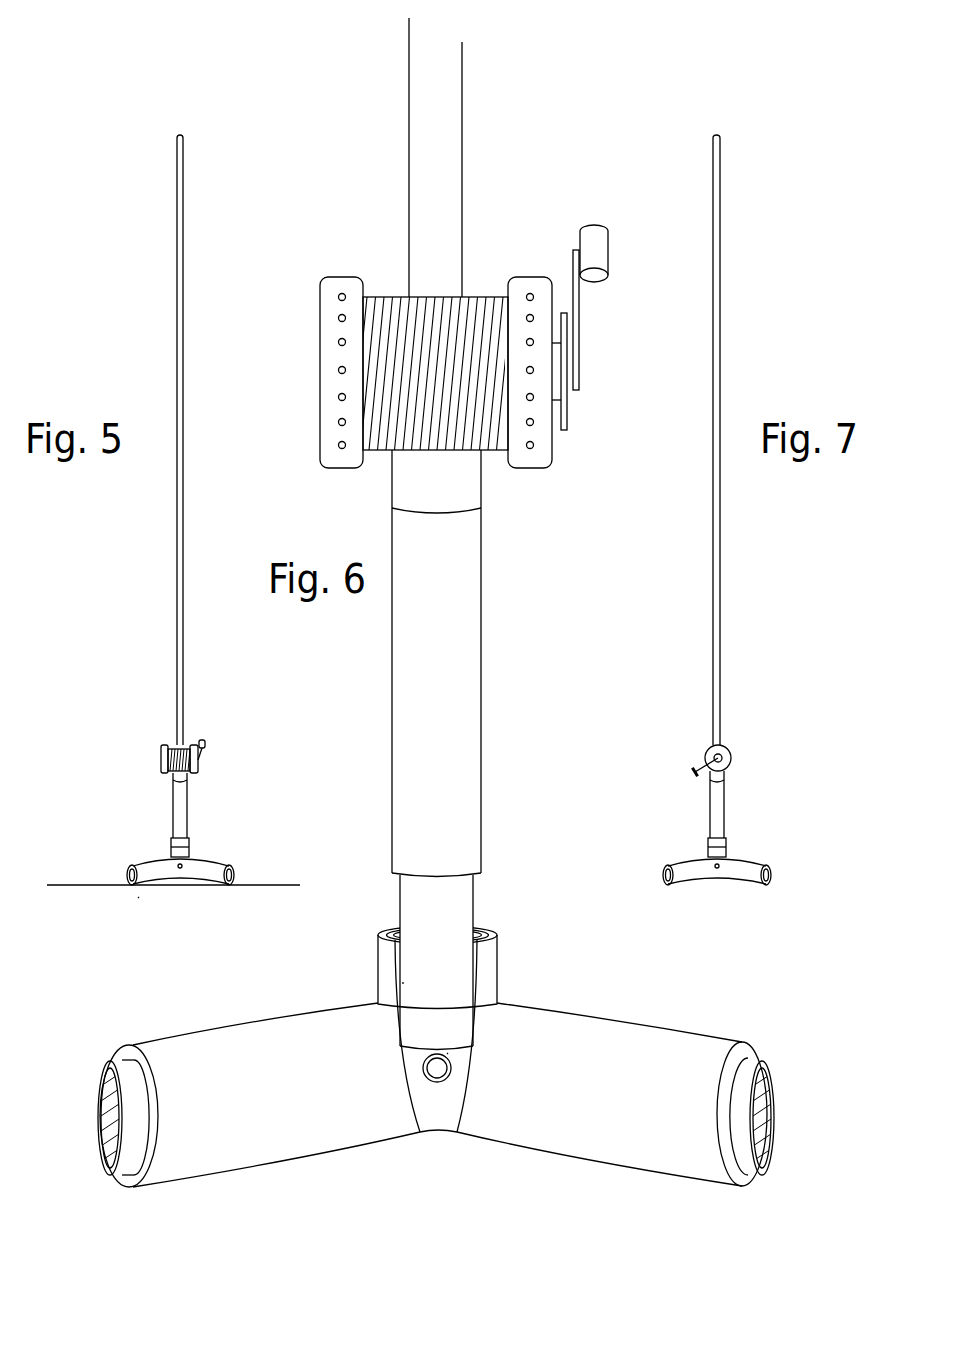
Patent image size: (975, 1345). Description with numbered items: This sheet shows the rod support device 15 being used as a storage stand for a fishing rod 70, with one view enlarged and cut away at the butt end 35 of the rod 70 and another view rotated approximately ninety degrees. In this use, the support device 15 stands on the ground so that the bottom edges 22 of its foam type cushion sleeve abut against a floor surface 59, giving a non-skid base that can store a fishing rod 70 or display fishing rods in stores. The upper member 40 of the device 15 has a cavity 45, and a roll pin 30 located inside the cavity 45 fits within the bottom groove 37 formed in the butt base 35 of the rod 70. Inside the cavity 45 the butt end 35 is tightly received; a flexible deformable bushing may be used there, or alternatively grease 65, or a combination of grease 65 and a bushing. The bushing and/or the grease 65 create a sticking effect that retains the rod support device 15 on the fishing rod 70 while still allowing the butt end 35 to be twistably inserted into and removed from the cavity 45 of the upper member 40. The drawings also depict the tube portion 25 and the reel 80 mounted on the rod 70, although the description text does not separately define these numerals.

In FIG. 6, the rod support device 15 is at (436, 1101).
In FIG. 5, the rod support device 15 is at (94, 933).
In FIG. 7, the rod support device 15 is at (713, 914).
In FIG. 5, the bottom edges 22 is at (182, 857).
In FIG. 6, the outer tube 25 is at (384, 663).
In FIG. 5, the outer tube 25 is at (229, 815).
In FIG. 7, the outer tube 25 is at (767, 814).
In FIG. 6, the roll pin 30 is at (473, 1133).
In FIG. 6, the butt end 35 is at (393, 961).
In FIG. 6, the bottom groove 37 is at (503, 1011).
In FIG. 6, the upper member 40 is at (387, 959).
In FIG. 6, the cavity 45 is at (486, 907).
In FIG. 5, the floor surface 59 is at (159, 910).
In FIG. 6, the grease 65 is at (493, 954).
In FIG. 6, the fishing rod 70 is at (372, 157).
In FIG. 5, the fishing rod 70 is at (132, 440).
In FIG. 7, the fishing rod 70 is at (670, 440).
In FIG. 6, the reel 80 is at (415, 346).
In FIG. 5, the reel 80 is at (133, 753).
In FIG. 7, the reel 80 is at (669, 755).